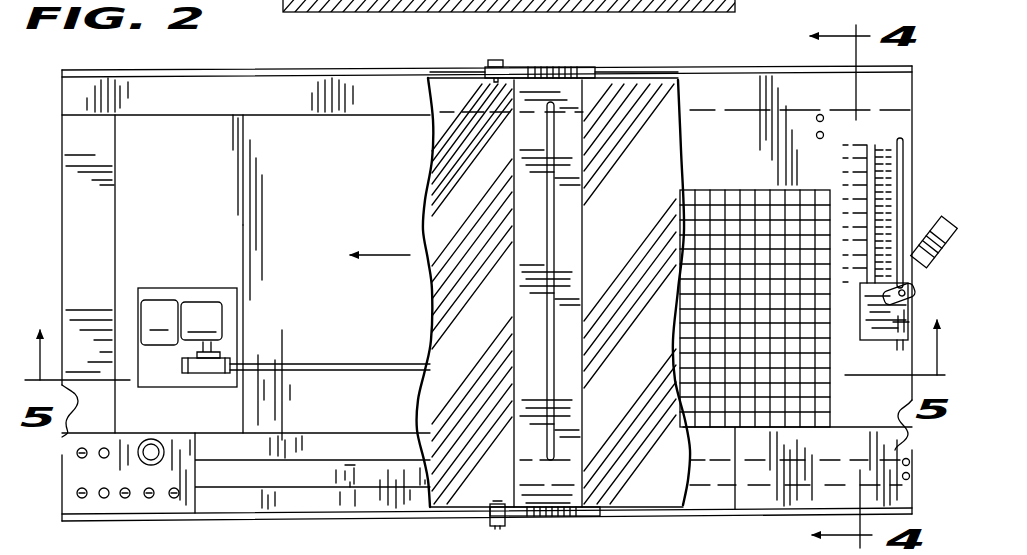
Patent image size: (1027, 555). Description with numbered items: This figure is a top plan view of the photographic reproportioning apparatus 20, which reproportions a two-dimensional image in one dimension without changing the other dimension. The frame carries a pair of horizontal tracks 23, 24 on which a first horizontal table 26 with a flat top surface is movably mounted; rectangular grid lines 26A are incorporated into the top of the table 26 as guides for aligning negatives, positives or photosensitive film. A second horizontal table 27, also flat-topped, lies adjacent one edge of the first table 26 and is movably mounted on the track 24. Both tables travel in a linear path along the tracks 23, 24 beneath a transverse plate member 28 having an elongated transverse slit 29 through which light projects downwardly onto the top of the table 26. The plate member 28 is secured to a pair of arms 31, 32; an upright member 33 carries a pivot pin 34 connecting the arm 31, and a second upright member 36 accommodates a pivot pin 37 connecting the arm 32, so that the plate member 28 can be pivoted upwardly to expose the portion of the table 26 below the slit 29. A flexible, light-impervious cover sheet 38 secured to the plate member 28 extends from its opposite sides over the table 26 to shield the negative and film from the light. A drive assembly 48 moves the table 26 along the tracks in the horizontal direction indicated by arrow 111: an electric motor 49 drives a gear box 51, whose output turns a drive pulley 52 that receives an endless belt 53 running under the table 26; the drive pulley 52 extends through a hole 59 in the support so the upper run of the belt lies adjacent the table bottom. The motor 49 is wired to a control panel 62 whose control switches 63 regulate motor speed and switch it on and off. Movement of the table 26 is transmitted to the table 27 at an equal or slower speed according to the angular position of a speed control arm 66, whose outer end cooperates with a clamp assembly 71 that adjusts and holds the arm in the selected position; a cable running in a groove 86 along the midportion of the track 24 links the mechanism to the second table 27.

The photographic reproportioning apparatus 20 is at (742, 58).
The horizontal track 23 is at (360, 112).
The horizontal track 24 is at (340, 443).
The first horizontal table 26 is at (376, 12).
The rectangular grid lines 26A is at (758, 195).
The second horizontal table 27 is at (768, 496).
The transverse plate member 28 is at (574, 200).
The elongated transverse slit 29 is at (556, 283).
The arm 31 is at (586, 68).
The arm 32 is at (618, 552).
The upright member 33 is at (510, 67).
The pivot pin 34 is at (490, 61).
The upright member 36 is at (505, 552).
The pivot pin 37 is at (496, 530).
The cover sheet 38 is at (670, 200).
The drive assembly 48 is at (196, 278).
The electric motor 49 is at (157, 310).
The gear box 51 is at (210, 313).
The drive pulley 52 is at (221, 358).
The endless belt 53 is at (329, 360).
The hole 59 is at (184, 382).
The control panel 62 is at (200, 466).
The control switches 63 is at (130, 492).
The speed control arm 66 is at (930, 224).
The clamp assembly 71 is at (869, 352).
The groove 86 is at (382, 467).
The arrow 111 is at (406, 255).